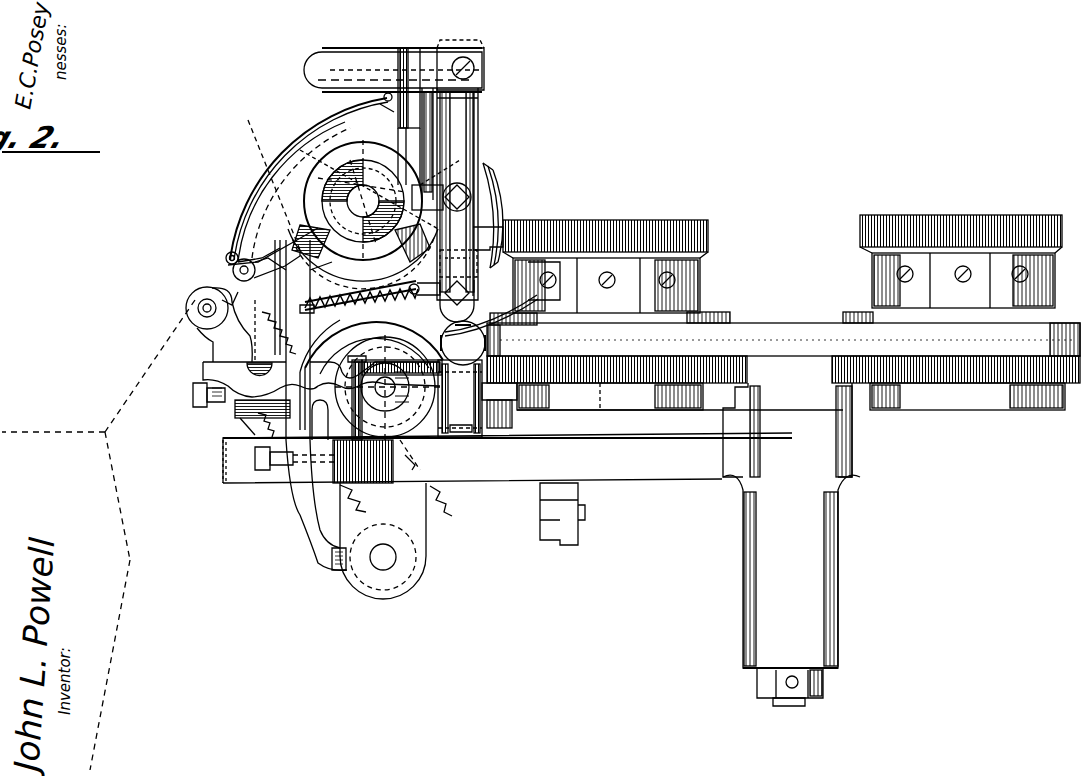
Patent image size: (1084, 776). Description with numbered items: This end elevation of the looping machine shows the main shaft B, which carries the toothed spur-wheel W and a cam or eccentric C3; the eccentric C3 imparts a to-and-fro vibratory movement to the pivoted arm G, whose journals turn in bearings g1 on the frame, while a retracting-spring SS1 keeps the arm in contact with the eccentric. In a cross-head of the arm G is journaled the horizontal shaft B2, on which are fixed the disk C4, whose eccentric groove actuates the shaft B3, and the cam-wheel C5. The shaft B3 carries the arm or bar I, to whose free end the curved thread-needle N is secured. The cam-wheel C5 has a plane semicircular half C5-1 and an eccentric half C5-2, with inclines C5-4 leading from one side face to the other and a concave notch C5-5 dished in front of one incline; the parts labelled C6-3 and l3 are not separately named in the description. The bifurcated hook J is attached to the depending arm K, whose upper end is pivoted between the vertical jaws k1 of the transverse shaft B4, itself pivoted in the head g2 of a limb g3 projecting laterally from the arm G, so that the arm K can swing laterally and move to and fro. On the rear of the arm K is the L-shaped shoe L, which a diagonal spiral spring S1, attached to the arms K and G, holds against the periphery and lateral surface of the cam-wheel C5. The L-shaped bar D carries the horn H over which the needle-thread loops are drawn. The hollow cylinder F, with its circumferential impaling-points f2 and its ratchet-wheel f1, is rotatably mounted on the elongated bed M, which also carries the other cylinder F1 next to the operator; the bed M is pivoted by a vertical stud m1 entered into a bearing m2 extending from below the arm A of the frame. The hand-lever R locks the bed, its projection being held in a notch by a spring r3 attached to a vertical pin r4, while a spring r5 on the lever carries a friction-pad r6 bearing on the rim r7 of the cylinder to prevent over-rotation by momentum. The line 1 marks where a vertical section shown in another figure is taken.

The section line 1 is at (363, 200).
The head g2 is at (408, 48).
The limb g3 is at (415, 95).
The bearings g1 is at (392, 541).
The horizontal transverse shaft B4 is at (325, 62).
The vertical jaws k1 is at (484, 66).
The depending arm K is at (470, 118).
The latch rectangle l3 is at (433, 182).
The needle-bar I is at (470, 170).
The L-shaped shoe L is at (498, 186).
The curved thread-needle N is at (500, 204).
The bifurcated hook J is at (458, 286).
The L-shaped horizontal bar D is at (480, 290).
The hub ring C6-3 is at (363, 201).
The eccentric half of cam-wheel periphery C5-2 is at (363, 259).
The plane semicircular half of cam-wheel C5-1 is at (330, 176).
The concave notch C5-5 is at (300, 186).
The inclines C5-4 is at (300, 230).
The cam-wheel C5 is at (290, 146).
The disk C4 is at (320, 116).
The horizontal shaft B2 is at (280, 158).
The shaft B3 is at (292, 236).
The retracting-spring SS1 is at (382, 336).
The spiral spring S1 is at (355, 332).
The spring r3 is at (398, 368).
The vertical pin r4 is at (368, 412).
The spring r5 is at (528, 300).
The friction-pad r6 is at (525, 326).
The hand-lever R is at (463, 343).
The main shaft B is at (460, 398).
The cam or eccentric C3 is at (408, 430).
The toothed spur-wheel W is at (229, 331).
The pivoted arm G is at (232, 286).
The arm A is at (533, 477).
The impaling-points f2 is at (512, 222).
The hollow cylinder F is at (963, 280).
The other cylinder F1 is at (606, 285).
The horn H is at (550, 280).
The rim r7 is at (726, 314).
The cylinder-bed M is at (780, 322).
The ratchet-wheel f1 is at (615, 395).
The bearing m2 is at (791, 522).
The vertical shaft or stud m1 is at (798, 704).